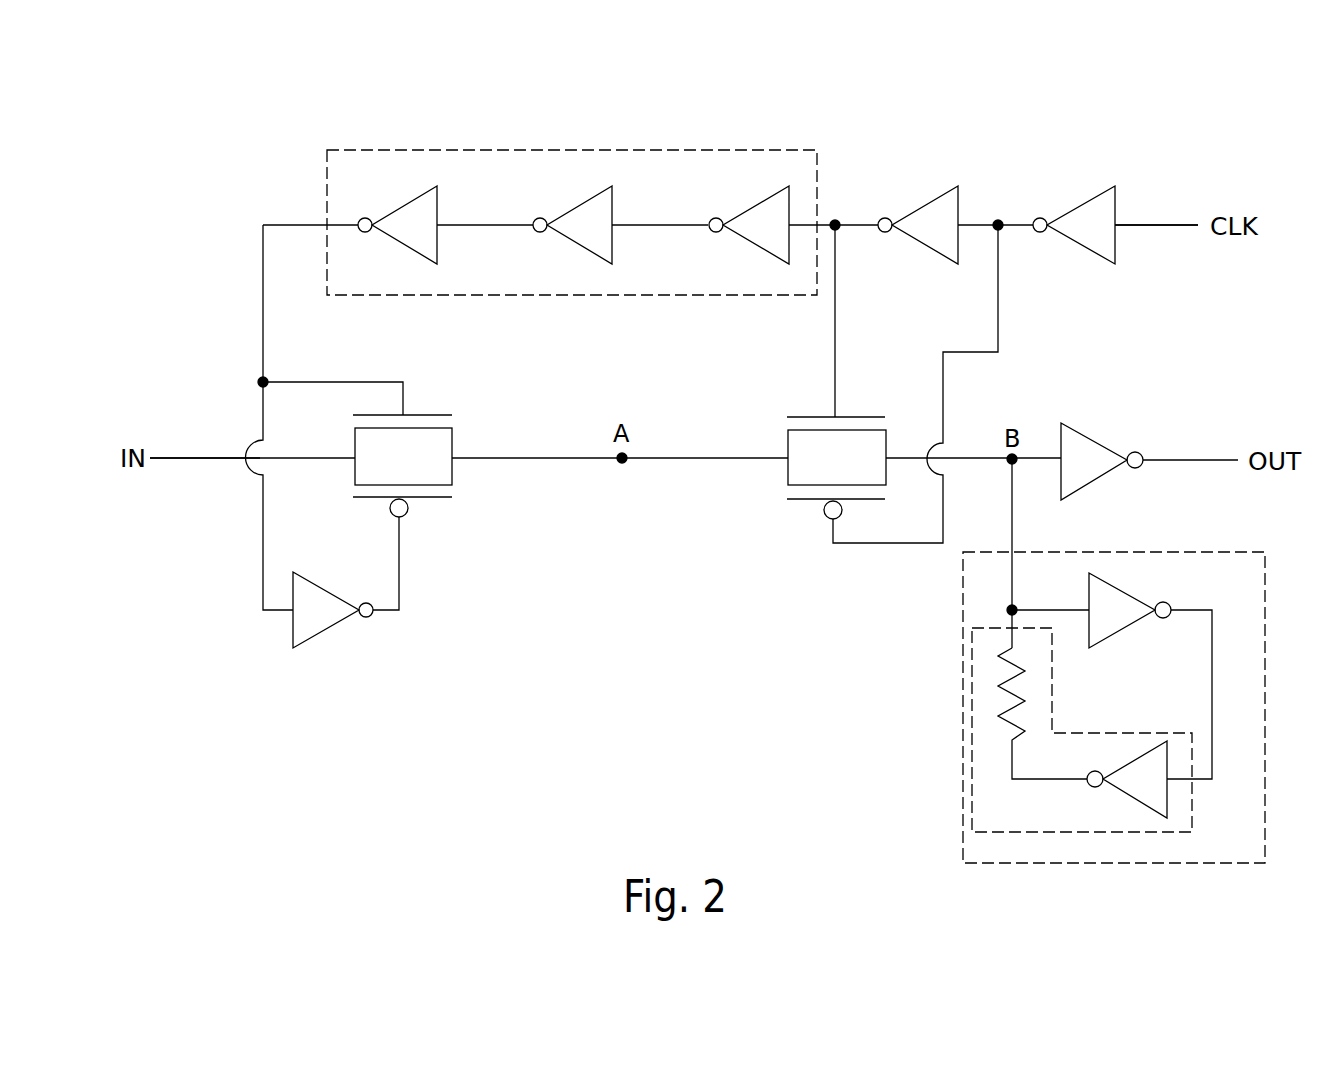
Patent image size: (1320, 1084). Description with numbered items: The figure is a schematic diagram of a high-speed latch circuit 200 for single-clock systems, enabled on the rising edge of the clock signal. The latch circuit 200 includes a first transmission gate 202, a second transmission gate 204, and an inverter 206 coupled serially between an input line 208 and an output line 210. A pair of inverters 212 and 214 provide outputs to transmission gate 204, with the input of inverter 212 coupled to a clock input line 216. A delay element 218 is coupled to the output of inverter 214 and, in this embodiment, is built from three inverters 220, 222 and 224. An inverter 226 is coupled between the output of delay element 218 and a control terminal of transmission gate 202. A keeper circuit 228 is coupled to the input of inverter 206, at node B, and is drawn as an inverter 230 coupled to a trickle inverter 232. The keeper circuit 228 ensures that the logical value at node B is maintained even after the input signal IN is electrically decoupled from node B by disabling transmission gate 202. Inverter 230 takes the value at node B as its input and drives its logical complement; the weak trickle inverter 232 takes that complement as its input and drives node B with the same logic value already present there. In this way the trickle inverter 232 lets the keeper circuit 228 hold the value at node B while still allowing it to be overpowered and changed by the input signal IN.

The latch circuit 200 is at (1108, 108).
The first transmission gate 202 is at (452, 478).
The second transmission gate 204 is at (787, 473).
The inverter 206 is at (1101, 473).
The input line 208 is at (236, 455).
The output line 210 is at (1228, 458).
The inverter 212 is at (1104, 196).
The inverter 214 is at (938, 198).
The clock input line 216 is at (1192, 224).
The delay element 218 is at (548, 222).
The inverter 220 is at (776, 198).
The inverter 222 is at (597, 197).
The inverter 224 is at (420, 200).
The inverter 226 is at (328, 629).
The keeper circuit 228 is at (1087, 661).
The inverter 230 is at (1133, 625).
The trickle inverter 232 is at (1114, 792).